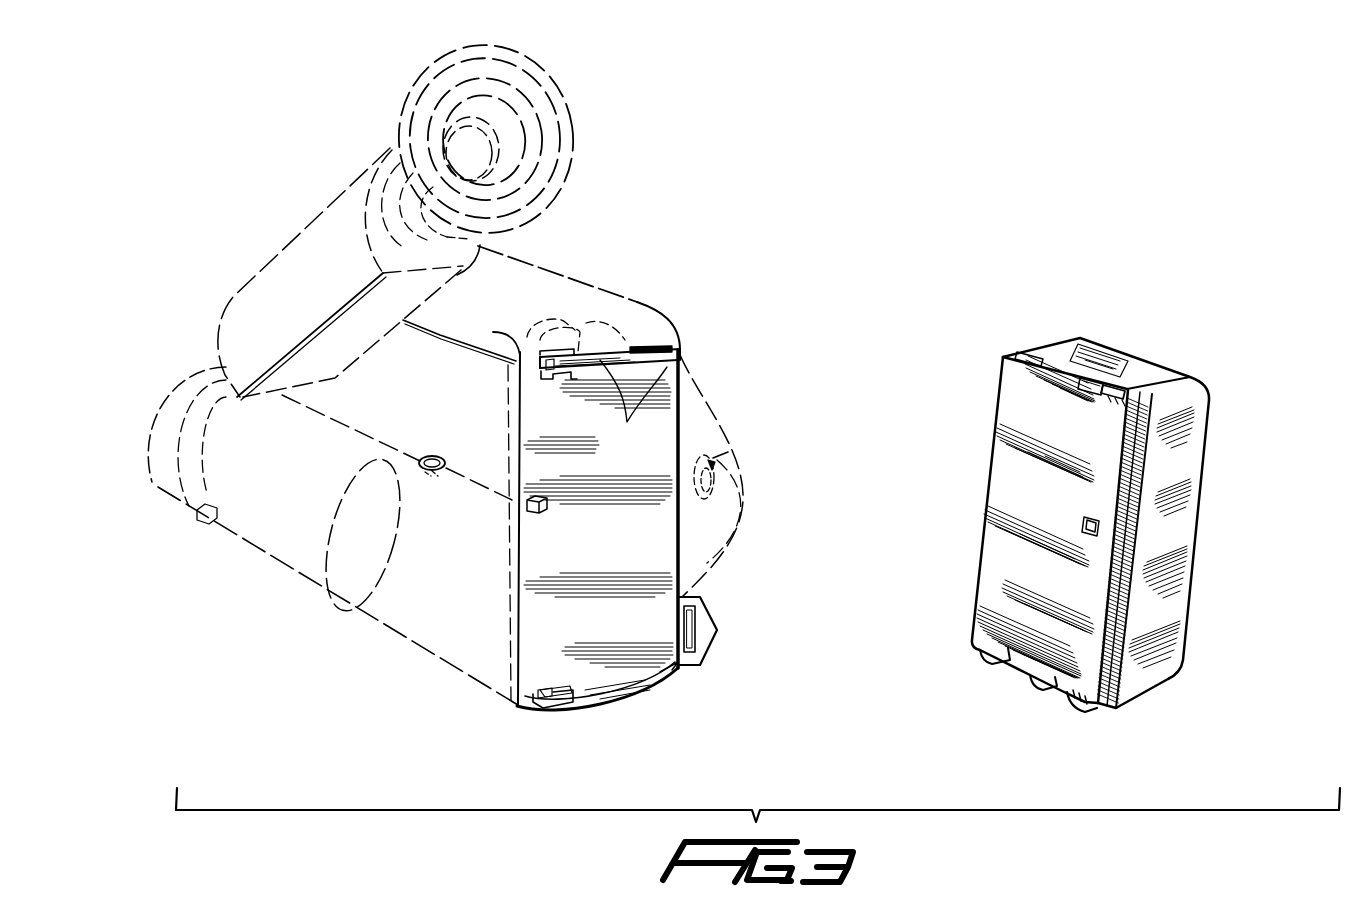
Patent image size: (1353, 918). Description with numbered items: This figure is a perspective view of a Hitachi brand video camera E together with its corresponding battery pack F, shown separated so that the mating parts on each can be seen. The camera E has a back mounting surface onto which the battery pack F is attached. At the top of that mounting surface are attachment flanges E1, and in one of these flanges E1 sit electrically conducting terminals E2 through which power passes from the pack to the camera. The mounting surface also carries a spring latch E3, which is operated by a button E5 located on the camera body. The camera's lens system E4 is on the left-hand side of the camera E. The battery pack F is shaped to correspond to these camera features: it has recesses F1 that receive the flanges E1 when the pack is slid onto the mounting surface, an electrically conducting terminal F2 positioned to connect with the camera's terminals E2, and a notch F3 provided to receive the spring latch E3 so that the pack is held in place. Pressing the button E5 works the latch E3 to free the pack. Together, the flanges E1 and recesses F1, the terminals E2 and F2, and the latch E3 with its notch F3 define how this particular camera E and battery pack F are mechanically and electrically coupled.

The video camera E is at (378, 604).
The attachment flanges E1 is at (567, 373).
The electrically conducting terminals E2 is at (545, 366).
The spring latch E3 is at (541, 512).
The lens system E4 is at (410, 110).
The button E5 is at (434, 471).
The battery pack F is at (1187, 520).
The recesses F1 is at (1030, 352).
The electrically conducting terminal F2 is at (1127, 381).
The notch F3 is at (1088, 516).